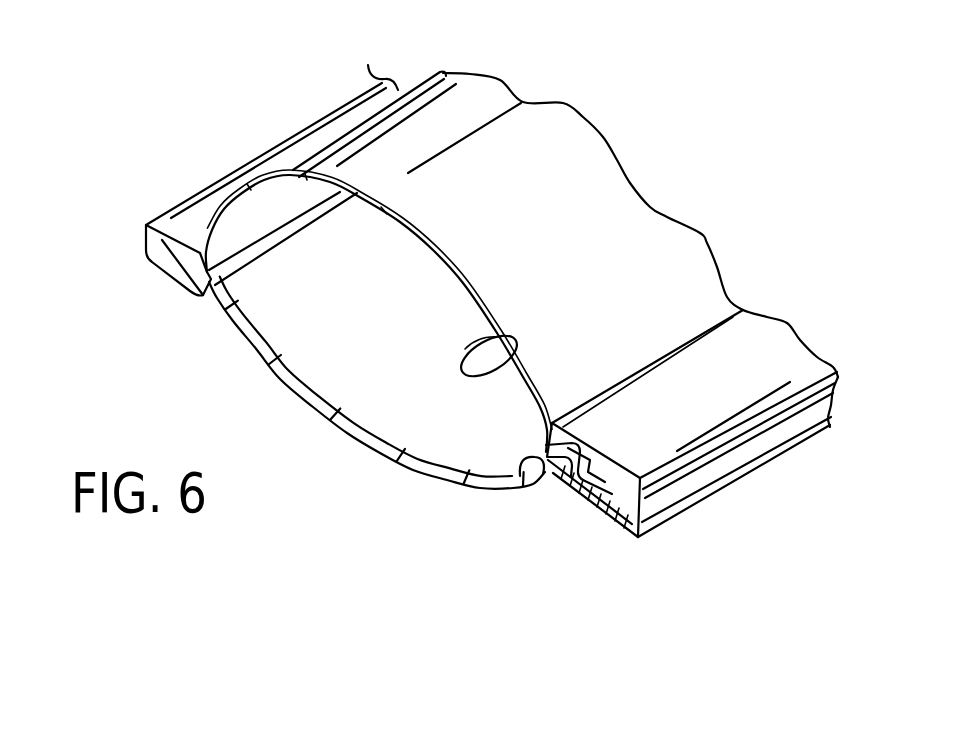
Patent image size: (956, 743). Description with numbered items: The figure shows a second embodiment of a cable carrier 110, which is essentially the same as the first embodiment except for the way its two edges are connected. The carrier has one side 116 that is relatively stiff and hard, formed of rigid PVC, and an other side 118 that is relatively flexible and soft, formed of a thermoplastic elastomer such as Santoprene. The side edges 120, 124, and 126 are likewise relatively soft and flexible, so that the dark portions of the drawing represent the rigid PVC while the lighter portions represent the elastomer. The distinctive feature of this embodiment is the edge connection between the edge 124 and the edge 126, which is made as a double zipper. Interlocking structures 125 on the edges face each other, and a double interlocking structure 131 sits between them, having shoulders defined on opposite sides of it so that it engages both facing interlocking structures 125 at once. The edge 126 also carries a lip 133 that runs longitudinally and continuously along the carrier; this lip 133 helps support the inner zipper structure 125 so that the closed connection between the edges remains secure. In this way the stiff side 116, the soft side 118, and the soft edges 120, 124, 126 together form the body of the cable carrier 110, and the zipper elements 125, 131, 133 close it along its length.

The cable carrier 110 is at (227, 160).
The side edge 120 is at (182, 207).
The one side 116 is at (282, 378).
The other side 118 is at (463, 268).
The edge 124 is at (725, 491).
The edge 126 is at (792, 380).
The interlocking structures 125 is at (582, 470).
The double interlocking structure 131 is at (592, 505).
The lip 133 is at (536, 463).